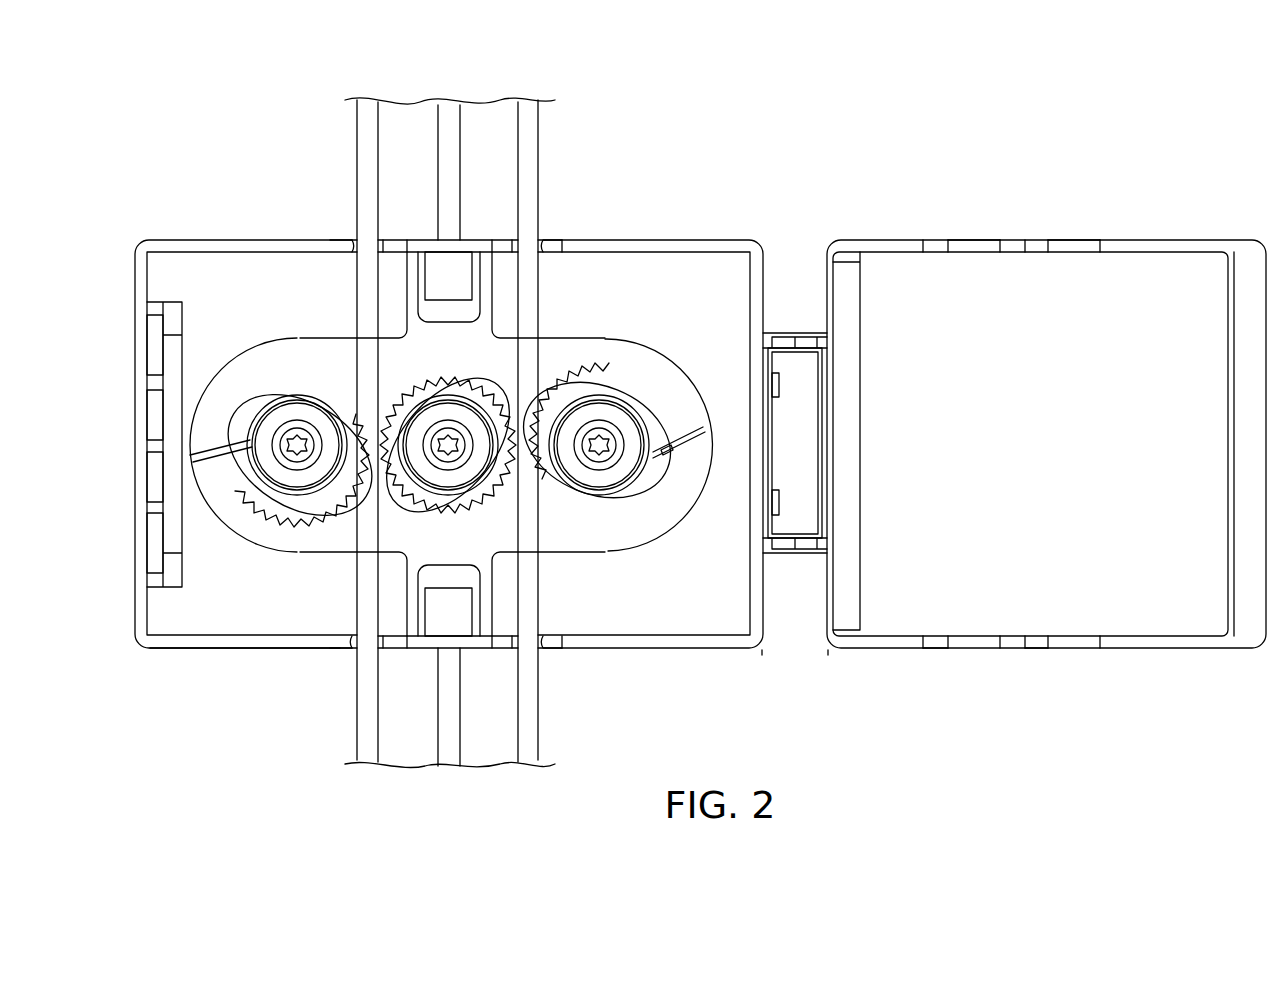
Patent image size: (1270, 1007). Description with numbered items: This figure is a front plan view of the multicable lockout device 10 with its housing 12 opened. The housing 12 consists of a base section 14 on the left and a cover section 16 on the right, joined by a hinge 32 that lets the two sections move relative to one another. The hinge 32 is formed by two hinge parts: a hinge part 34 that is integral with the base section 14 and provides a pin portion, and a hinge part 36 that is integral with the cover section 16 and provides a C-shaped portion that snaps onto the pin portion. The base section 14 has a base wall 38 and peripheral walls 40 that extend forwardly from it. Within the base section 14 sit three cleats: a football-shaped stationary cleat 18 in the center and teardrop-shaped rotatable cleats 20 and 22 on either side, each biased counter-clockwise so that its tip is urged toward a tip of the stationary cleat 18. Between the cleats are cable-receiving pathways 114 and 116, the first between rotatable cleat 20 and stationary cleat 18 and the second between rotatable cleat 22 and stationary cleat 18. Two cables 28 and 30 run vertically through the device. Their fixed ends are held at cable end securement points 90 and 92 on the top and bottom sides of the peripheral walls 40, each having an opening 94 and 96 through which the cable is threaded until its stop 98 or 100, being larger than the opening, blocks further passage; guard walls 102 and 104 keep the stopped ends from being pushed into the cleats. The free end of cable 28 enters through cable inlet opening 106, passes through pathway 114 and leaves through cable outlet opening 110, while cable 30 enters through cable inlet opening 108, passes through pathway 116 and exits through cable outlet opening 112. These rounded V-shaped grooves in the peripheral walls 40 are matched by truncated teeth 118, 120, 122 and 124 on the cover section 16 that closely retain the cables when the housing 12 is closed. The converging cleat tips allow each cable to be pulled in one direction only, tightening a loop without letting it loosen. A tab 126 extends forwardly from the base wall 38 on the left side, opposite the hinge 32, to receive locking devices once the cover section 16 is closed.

The multicable lockout device 10 is at (848, 122).
The housing 12 is at (833, 650).
The base section 14 is at (648, 246).
The cover section 16 is at (906, 276).
The stationary cleat 18 is at (372, 516).
The rotatable cleat 20 is at (316, 505).
The rotatable cleat 22 is at (568, 386).
The cable 28 is at (383, 180).
The cable 30 is at (540, 740).
The hinge 32 is at (785, 325).
The hinge part 34 is at (808, 555).
The hinge part 36 is at (800, 515).
The base wall 38 is at (251, 296).
The peripheral walls 40 is at (175, 645).
The cable end securement point 90 is at (466, 238).
The cable end securement point 92 is at (430, 647).
The opening 94 is at (450, 243).
The opening 96 is at (447, 642).
The stop 98 is at (458, 275).
The stop 100 is at (447, 607).
The guard wall 102 is at (407, 298).
The guard wall 104 is at (487, 583).
The cable inlet opening 106 is at (348, 244).
The cable inlet opening 108 is at (556, 650).
The cable outlet opening 110 is at (338, 650).
The cable outlet opening 112 is at (560, 244).
The cable-receiving pathway 114 is at (385, 510).
The cable-receiving pathway 116 is at (522, 370).
The truncated tooth 118 is at (955, 250).
The truncated tooth 120 is at (1100, 246).
The truncated tooth 122 is at (945, 636).
The truncated tooth 124 is at (1033, 642).
The tab 126 is at (172, 372).